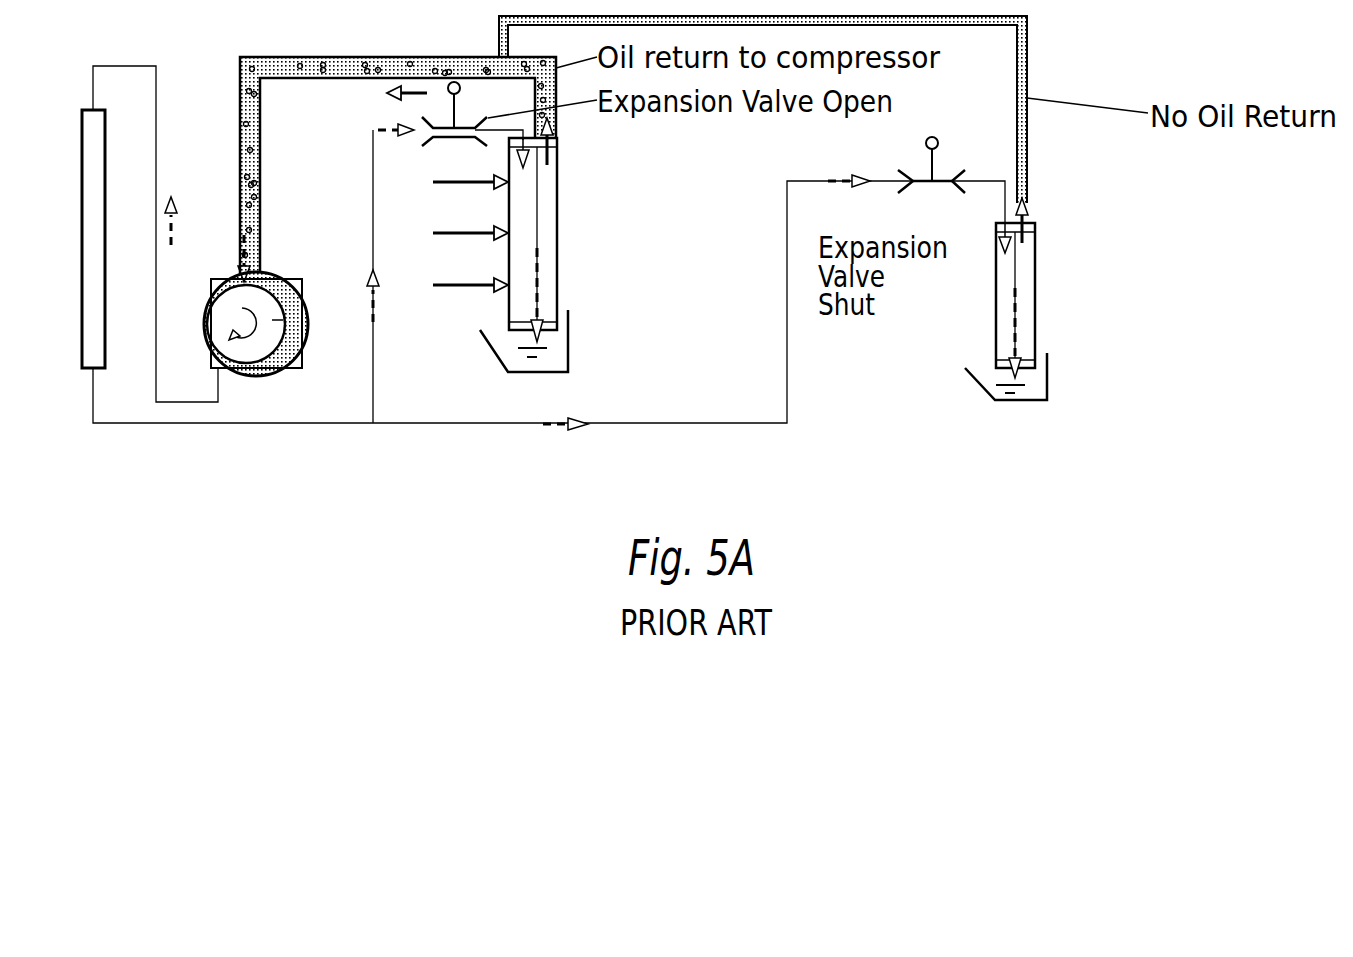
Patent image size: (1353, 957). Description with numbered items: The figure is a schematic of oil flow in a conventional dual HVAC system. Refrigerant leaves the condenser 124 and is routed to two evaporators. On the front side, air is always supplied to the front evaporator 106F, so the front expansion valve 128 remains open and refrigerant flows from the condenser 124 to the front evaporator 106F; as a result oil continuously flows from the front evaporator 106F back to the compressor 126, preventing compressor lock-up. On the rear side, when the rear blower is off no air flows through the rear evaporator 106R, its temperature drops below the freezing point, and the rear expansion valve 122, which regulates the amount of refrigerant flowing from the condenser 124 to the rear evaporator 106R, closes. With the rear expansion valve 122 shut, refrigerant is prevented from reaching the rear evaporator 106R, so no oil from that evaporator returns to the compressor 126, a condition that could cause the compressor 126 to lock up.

The condenser 124 is at (82, 228).
The compressor 126 is at (273, 375).
The front expansion valve 128 is at (442, 137).
The front evaporator 106F is at (557, 273).
The rear evaporator 106R is at (1035, 290).
The rear expansion valve 122 is at (943, 177).